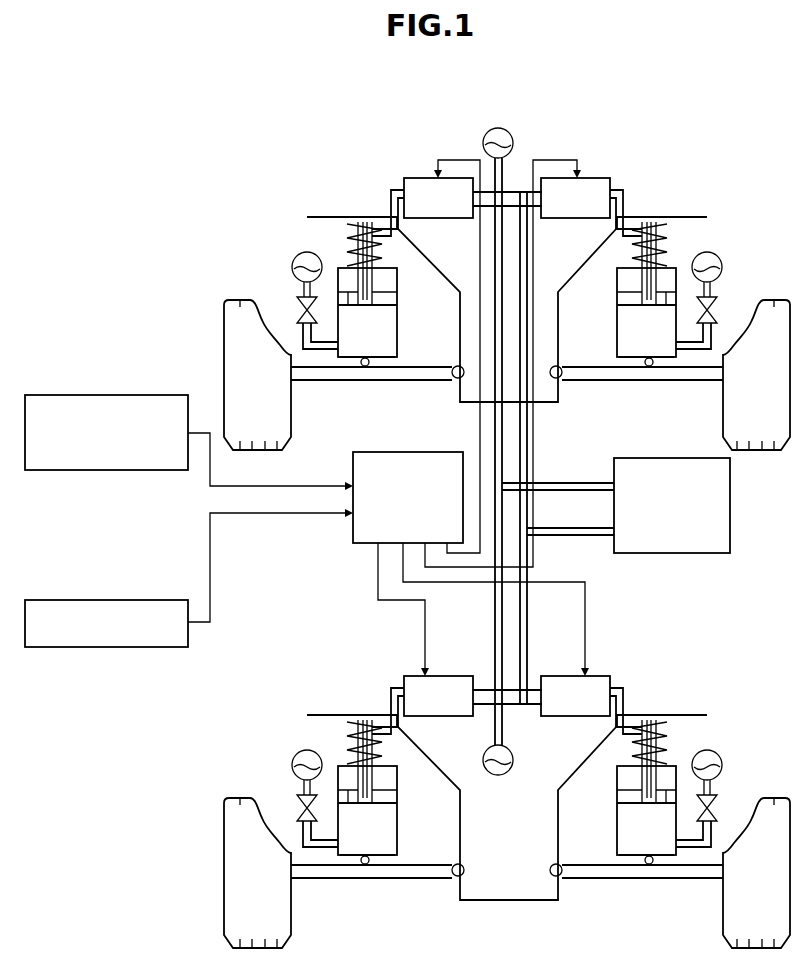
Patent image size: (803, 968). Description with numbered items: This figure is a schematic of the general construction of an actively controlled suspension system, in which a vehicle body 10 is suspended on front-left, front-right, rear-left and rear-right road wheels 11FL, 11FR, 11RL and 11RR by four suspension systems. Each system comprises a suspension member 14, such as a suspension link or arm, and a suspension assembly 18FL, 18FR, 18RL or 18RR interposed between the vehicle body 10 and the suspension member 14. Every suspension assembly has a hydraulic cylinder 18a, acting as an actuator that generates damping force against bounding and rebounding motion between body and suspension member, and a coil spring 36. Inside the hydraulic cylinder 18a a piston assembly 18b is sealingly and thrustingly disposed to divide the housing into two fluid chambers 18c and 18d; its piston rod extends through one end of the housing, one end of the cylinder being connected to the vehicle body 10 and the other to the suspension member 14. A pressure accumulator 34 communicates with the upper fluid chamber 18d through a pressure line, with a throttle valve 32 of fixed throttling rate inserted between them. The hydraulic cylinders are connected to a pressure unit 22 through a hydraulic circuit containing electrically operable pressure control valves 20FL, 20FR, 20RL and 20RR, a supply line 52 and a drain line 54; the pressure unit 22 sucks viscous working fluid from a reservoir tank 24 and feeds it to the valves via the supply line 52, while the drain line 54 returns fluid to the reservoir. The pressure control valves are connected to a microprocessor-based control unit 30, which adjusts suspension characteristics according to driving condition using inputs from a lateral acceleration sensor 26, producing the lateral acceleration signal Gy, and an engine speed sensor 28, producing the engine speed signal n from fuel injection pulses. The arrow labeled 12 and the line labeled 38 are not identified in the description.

The vehicle body 10 is at (556, 403).
The front-left road wheel 11FL is at (224, 330).
The front-right road wheel 11FR is at (728, 375).
The rear-left road wheel 11RL is at (220, 873).
The rear-right road wheel 11RR is at (717, 873).
The active suspension system 12 is at (650, 585).
The suspension member 14 is at (357, 383).
The front-left suspension assembly 18FL is at (422, 326).
The front-right suspension assembly 18FR is at (622, 312).
The rear-left suspension assembly 18RL is at (391, 810).
The rear-right suspension assembly 18RR is at (621, 810).
The hydraulic cylinder 18a is at (420, 352).
The piston assembly 18b is at (388, 283).
The fluid chamber 18c is at (347, 352).
The upper fluid chamber 18d is at (343, 270).
The front-left pressure control valve 20FL is at (415, 178).
The front-right pressure control valve 20FR is at (587, 170).
The rear-left pressure control valve 20RL is at (426, 668).
The rear-right pressure control valve 20RR is at (587, 668).
The pressure unit 22 is at (730, 508).
The reservoir tank 24 is at (498, 128).
The lateral acceleration sensor 26 is at (128, 395).
The engine speed sensor 28 is at (128, 600).
The control unit 30 is at (412, 452).
The throttle valve 32 is at (296, 312).
The pressure accumulator 34 is at (293, 262).
The coil spring 36 is at (352, 243).
The hydraulic line 38 is at (390, 191).
The supply line 52 is at (568, 483).
The drain line 54 is at (570, 514).